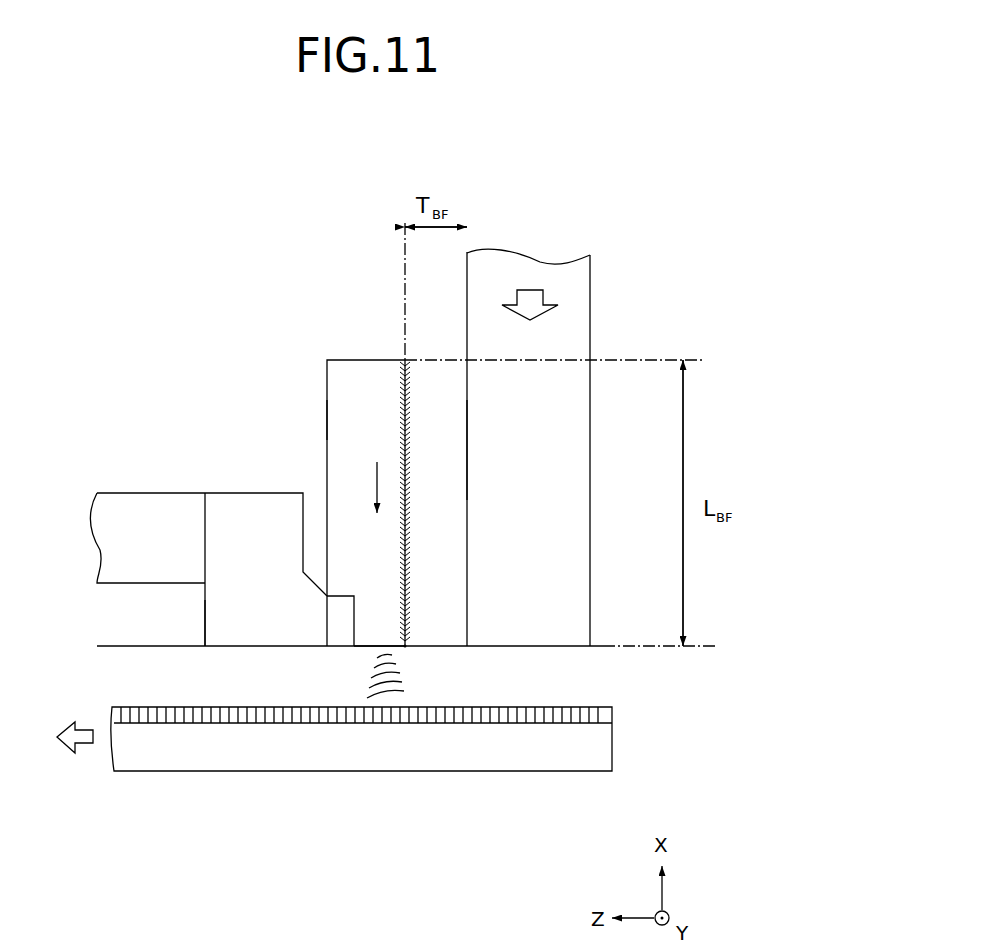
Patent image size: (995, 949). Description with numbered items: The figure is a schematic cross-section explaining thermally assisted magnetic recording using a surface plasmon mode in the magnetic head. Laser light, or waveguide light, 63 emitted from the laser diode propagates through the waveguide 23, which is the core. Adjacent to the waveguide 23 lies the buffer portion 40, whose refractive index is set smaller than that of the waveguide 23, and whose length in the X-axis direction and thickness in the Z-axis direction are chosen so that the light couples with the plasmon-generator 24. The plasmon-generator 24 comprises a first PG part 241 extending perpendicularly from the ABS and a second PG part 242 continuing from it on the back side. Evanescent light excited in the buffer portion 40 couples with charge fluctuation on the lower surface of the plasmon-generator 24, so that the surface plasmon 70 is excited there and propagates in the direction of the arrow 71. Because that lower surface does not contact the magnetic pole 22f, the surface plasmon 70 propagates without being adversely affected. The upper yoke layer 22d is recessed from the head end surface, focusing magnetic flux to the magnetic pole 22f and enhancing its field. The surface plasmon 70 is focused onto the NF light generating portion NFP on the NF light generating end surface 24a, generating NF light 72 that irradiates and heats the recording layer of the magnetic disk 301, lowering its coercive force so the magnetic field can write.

The upper yoke layer 22d is at (138, 502).
The magnetic pole 22f is at (225, 617).
The waveguide 23 is at (578, 288).
The plasmon-generator 24 is at (377, 357).
The first PG part 241 is at (370, 623).
The NF light generating end surface 24a is at (373, 650).
The buffer portion 40 is at (445, 454).
The laser light (waveguide light) 63 is at (530, 297).
The surface plasmon 70 is at (398, 412).
The arrow 71 is at (372, 482).
The NF light 72 is at (412, 680).
The second PG part 242 is at (350, 424).
The magnetic disk 301 is at (618, 745).
The NF light generating portion NFP is at (406, 648).